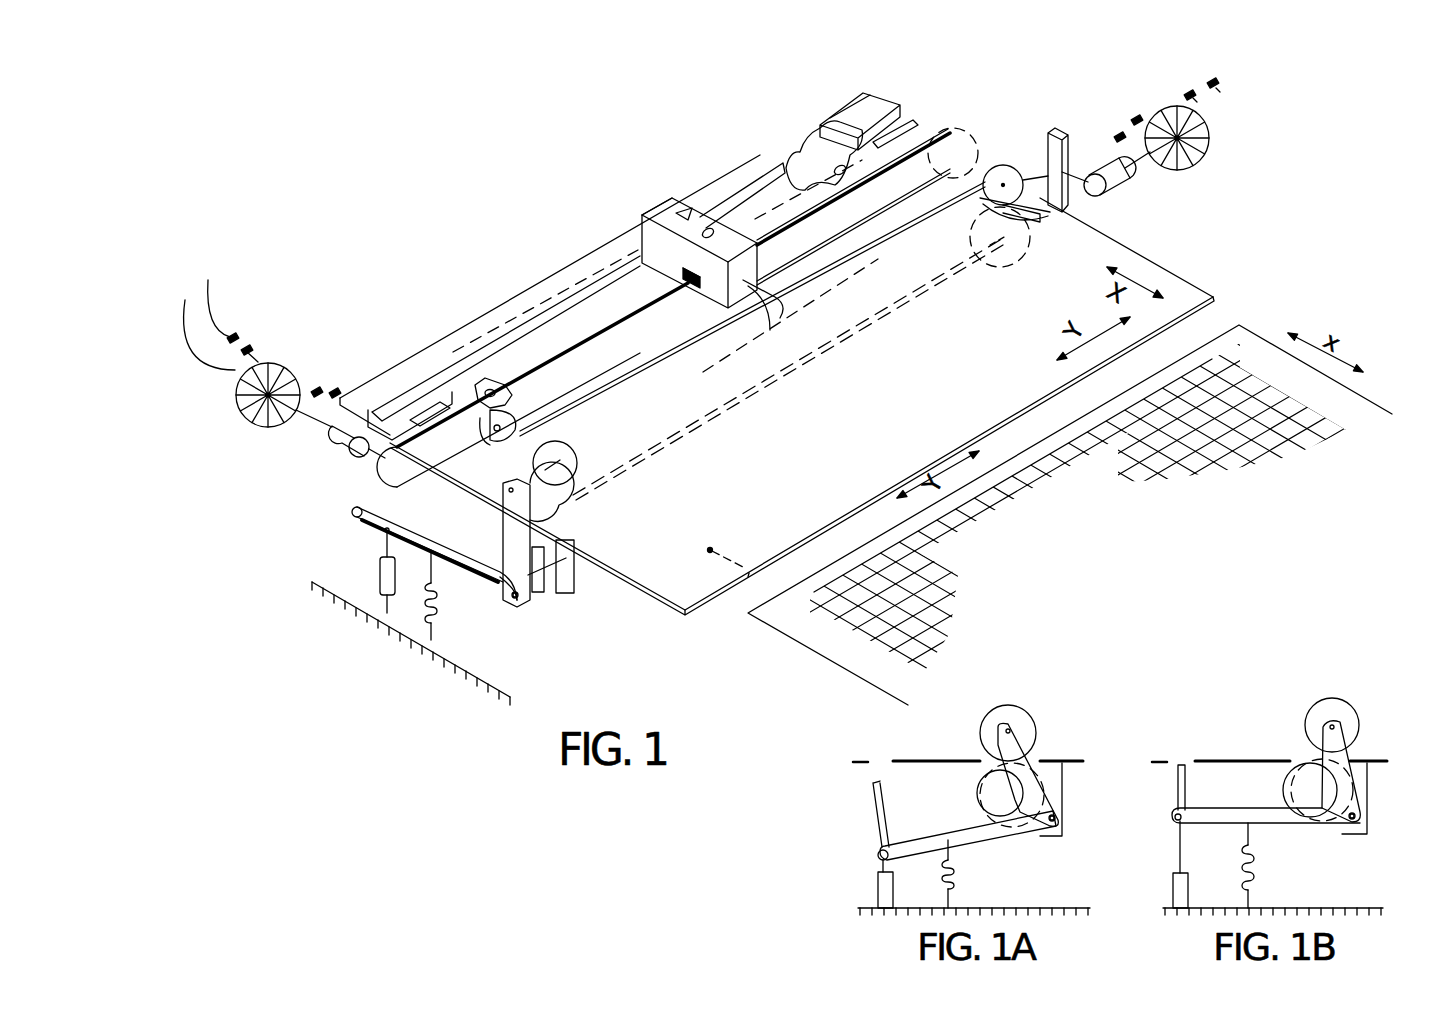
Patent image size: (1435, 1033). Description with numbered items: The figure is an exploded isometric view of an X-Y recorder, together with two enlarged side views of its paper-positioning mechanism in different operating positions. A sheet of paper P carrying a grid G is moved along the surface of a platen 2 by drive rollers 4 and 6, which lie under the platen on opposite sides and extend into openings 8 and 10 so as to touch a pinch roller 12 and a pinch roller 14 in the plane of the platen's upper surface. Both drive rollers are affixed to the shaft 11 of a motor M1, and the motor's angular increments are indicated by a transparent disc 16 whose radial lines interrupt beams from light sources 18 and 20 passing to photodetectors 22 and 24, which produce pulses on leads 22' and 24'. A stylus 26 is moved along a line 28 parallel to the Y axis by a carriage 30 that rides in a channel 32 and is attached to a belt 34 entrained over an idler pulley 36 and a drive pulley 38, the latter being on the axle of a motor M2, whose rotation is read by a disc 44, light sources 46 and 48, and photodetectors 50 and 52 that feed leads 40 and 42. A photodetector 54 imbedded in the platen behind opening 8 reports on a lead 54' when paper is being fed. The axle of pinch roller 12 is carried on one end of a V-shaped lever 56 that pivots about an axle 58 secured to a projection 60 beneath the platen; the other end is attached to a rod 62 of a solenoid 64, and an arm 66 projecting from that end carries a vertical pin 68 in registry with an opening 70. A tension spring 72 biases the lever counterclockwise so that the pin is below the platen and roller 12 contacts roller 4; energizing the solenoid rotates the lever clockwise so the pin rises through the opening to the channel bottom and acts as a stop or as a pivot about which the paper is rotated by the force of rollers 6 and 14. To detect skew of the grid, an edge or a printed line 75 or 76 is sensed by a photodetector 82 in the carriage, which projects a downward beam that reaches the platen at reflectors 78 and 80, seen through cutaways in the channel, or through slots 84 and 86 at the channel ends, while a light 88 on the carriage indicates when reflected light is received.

In FIG. 1, the platen 2 is at (530, 290).
In FIG. 1A, the platen 2 is at (915, 760).
In FIG. 1B, the platen 2 is at (1228, 760).
In FIG. 1, the drive roller 4 is at (503, 522).
In FIG. 1A, the drive roller 4 is at (980, 780).
In FIG. 1B, the drive roller 4 is at (1283, 785).
In FIG. 1, the drive roller 6 is at (993, 262).
In FIG. 1, the opening 8 is at (562, 503).
In FIG. 1A, the opening 8 is at (1035, 762).
In FIG. 1B, the opening 8 is at (1345, 760).
In FIG. 1, the opening 10 is at (1045, 218).
In FIG. 1, the shaft 11 is at (757, 390).
In FIG. 1, the pinch roller 12 is at (573, 448).
In FIG. 1A, the pinch roller 12 is at (1030, 720).
In FIG. 1B, the pinch roller 12 is at (1355, 718).
In FIG. 1, the pinch roller 14 is at (1006, 165).
In FIG. 1, the transparent disc 16 is at (1188, 170).
In FIG. 1, the light source 18 is at (1118, 136).
In FIG. 1, the light source 20 is at (1137, 118).
In FIG. 1, the photodetector 22 is at (1232, 78).
In FIG. 1, the lead 22' is at (1262, 102).
In FIG. 1, the photodetector 24 is at (1167, 88).
In FIG. 1, the lead 24' is at (1231, 125).
In FIG. 1, the stylus 26 is at (772, 316).
In FIG. 1, the line 28 is at (825, 296).
In FIG. 1, the carriage 30 is at (673, 196).
In FIG. 1, the channel 32 is at (893, 96).
In FIG. 1, the belt 34 is at (822, 245).
In FIG. 1, the idler pulley 36 is at (963, 132).
In FIG. 1, the drive pulley 38 is at (418, 492).
In FIG. 1, the lead 40 is at (195, 323).
In FIG. 1, the lead 42 is at (214, 297).
In FIG. 1, the disc 44 is at (245, 400).
In FIG. 1, the light source 46 is at (316, 388).
In FIG. 1, the light source 48 is at (335, 392).
In FIG. 1, the photodetector 50 is at (250, 349).
In FIG. 1, the photodetector 52 is at (235, 336).
In FIG. 1, the photodetector 54 is at (732, 533).
In FIG. 1, the lead 54' is at (703, 629).
In FIG. 1, the V-shaped lever 56 is at (457, 582).
In FIG. 1A, the V-shaped lever 56 is at (1000, 838).
In FIG. 1B, the V-shaped lever 56 is at (1272, 825).
In FIG. 1, the axle 58 is at (528, 600).
In FIG. 1A, the axle 58 is at (1055, 823).
In FIG. 1B, the axle 58 is at (1360, 818).
In FIG. 1, the projection 60 is at (578, 585).
In FIG. 1A, the projection 60 is at (1064, 780).
In FIG. 1B, the projection 60 is at (1370, 778).
In FIG. 1, the rod 62 is at (383, 535).
In FIG. 1A, the rod 62 is at (875, 858).
In FIG. 1B, the rod 62 is at (1182, 840).
In FIG. 1, the solenoid 64 is at (380, 570).
In FIG. 1A, the solenoid 64 is at (878, 890).
In FIG. 1B, the solenoid 64 is at (1173, 885).
In FIG. 1, the arm 66 is at (356, 510).
In FIG. 1, the vertical pin 68 is at (520, 415).
In FIG. 1A, the vertical pin 68 is at (873, 785).
In FIG. 1B, the vertical pin 68 is at (1183, 762).
In FIG. 1, the opening 70 is at (496, 426).
In FIG. 1A, the opening 70 is at (878, 760).
In FIG. 1B, the opening 70 is at (1175, 758).
In FIG. 1, the tension spring 72 is at (438, 620).
In FIG. 1A, the tension spring 72 is at (955, 878).
In FIG. 1B, the tension spring 72 is at (1258, 870).
In FIG. 1, the printed line 75 is at (1105, 418).
In FIG. 1, the printed line 76 is at (815, 655).
In FIG. 1, the reflector 78 is at (487, 385).
In FIG. 1, the reflector 80 is at (800, 150).
In FIG. 1, the photodetector 82 is at (640, 213).
In FIG. 1, the slot 84 is at (415, 393).
In FIG. 1, the slot 86 is at (900, 120).
In FIG. 1, the light 88 is at (675, 262).
In FIG. 1, the motor M1 is at (1112, 190).
In FIG. 1, the motor M2 is at (332, 442).
In FIG. 1, the paper P is at (784, 640).
In FIG. 1, the grid G is at (1144, 547).